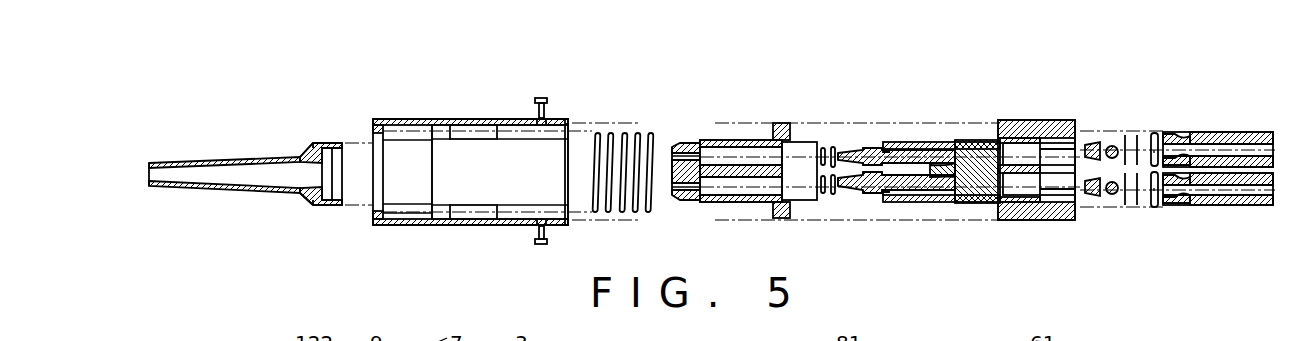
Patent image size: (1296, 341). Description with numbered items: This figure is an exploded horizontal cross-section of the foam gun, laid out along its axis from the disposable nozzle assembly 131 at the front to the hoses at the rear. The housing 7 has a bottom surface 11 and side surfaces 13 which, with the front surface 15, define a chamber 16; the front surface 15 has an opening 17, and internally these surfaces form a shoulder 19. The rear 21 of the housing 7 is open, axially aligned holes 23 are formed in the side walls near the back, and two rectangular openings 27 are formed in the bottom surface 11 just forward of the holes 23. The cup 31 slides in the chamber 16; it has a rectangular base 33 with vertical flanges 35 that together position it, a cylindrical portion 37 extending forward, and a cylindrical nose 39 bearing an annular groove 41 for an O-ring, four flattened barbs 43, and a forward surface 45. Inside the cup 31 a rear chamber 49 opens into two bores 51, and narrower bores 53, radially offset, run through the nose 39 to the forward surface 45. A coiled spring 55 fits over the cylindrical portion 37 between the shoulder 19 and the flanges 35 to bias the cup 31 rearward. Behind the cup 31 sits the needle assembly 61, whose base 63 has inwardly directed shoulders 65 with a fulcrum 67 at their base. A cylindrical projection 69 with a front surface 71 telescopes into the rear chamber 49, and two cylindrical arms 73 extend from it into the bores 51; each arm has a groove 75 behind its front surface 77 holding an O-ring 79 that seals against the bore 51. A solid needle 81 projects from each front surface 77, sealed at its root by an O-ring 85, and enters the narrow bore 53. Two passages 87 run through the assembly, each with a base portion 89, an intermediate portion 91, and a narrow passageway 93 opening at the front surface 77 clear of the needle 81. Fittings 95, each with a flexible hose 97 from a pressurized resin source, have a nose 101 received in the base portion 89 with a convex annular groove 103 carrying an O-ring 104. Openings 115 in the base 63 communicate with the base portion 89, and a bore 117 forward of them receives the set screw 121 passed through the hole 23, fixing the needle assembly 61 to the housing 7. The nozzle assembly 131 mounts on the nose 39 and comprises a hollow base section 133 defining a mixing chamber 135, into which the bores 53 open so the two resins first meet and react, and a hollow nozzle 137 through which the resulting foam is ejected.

The housing 7 is at (468, 122).
The bottom surface 11 is at (527, 184).
The side surfaces 13 is at (398, 120).
The front surface 15 is at (373, 135).
The chamber 16 is at (546, 183).
The opening 17 is at (378, 203).
The shoulder 19 is at (385, 134).
The rear 21 is at (568, 120).
The holes 23 is at (547, 118).
The rectangular openings 27 is at (480, 203).
The cup 31 is at (763, 131).
The base 33 is at (805, 128).
The vertical flanges 35 is at (786, 124).
The cylindrical portion 37 is at (752, 133).
The cylindrical nose 39 is at (686, 148).
The annular groove 41 is at (680, 187).
The barbs 43 is at (685, 143).
The forward surface 45 is at (668, 166).
The rear chamber 49 is at (824, 195).
The bores 51 is at (760, 148).
The narrower bores 53 is at (678, 145).
The coiled spring 55 is at (620, 140).
The needle assembly 61 is at (1061, 71).
The base 63 is at (1042, 125).
The shoulders 65 is at (987, 138).
The fulcrum 67 is at (998, 124).
The cylindrical projection 69 is at (960, 140).
The front surface 71 is at (920, 148).
The cylindrical arms 73 is at (903, 142).
The groove 75 is at (892, 143).
The front surface 77 is at (880, 200).
The O-ring 79 is at (840, 190).
The needle 81 is at (851, 153).
The O-ring 85 is at (855, 197).
The passages 87 is at (1100, 142).
The base portion 89 is at (1050, 212).
The intermediate portion 91 is at (1040, 135).
The narrow passageway 93 is at (948, 140).
The fittings 95 is at (1212, 132).
The flexible hose 97 is at (1257, 132).
The nose 101 is at (1185, 205).
The convex annular groove 103 is at (1183, 207).
The O-ring 104 is at (1154, 132).
The openings 115 is at (1065, 132).
The bore 117 is at (1050, 130).
The set screw 121 is at (540, 97).
The nozzle assembly 131 is at (279, 146).
The base section 133 is at (325, 205).
The mixing chamber 135 is at (328, 165).
The nozzle 137 is at (220, 160).